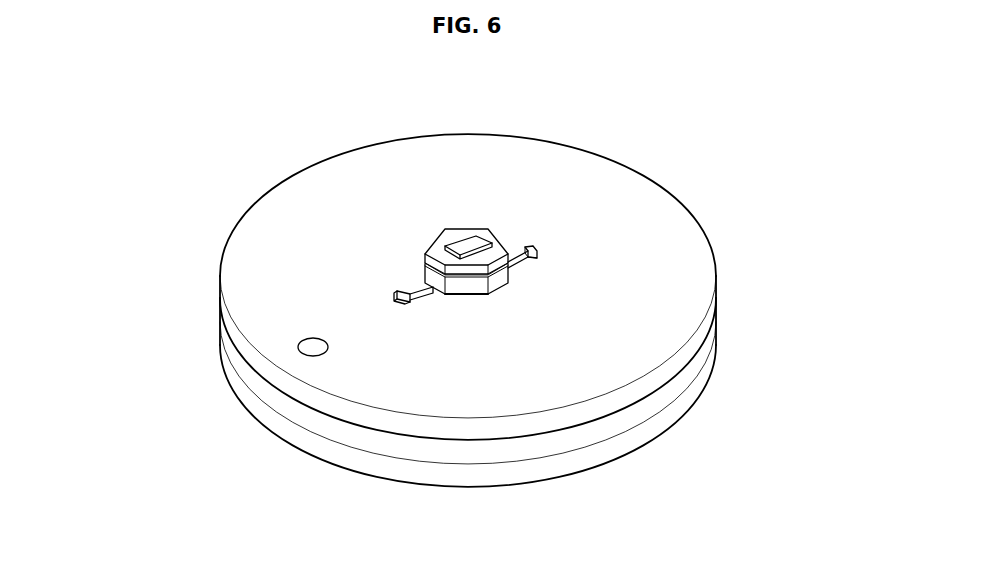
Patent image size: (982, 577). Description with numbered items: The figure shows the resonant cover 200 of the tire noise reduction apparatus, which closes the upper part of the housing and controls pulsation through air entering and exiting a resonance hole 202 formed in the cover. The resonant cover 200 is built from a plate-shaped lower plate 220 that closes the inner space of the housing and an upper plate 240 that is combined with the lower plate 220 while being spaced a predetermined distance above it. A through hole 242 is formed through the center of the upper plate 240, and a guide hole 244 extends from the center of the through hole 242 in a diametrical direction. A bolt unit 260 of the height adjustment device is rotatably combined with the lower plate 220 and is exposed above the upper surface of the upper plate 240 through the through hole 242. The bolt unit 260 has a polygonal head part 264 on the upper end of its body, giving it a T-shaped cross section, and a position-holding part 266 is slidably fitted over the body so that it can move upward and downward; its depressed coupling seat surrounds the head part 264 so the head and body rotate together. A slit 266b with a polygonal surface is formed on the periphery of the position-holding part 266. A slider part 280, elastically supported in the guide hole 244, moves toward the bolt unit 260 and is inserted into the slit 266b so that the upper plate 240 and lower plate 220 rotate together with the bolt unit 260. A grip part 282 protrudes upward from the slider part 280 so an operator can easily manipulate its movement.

The resonant cover 200 is at (331, 146).
The resonance hole 202 is at (298, 346).
The lower plate 220 is at (663, 393).
The upper plate 240 is at (653, 208).
The through hole 242 is at (458, 294).
The guide hole 244 is at (537, 262).
The bolt unit 260 is at (445, 227).
The head part 264 is at (471, 240).
The position-holding part 266 is at (494, 239).
The slit 266b is at (505, 283).
The slider part 280 is at (413, 288).
The grip part 282 is at (400, 290).